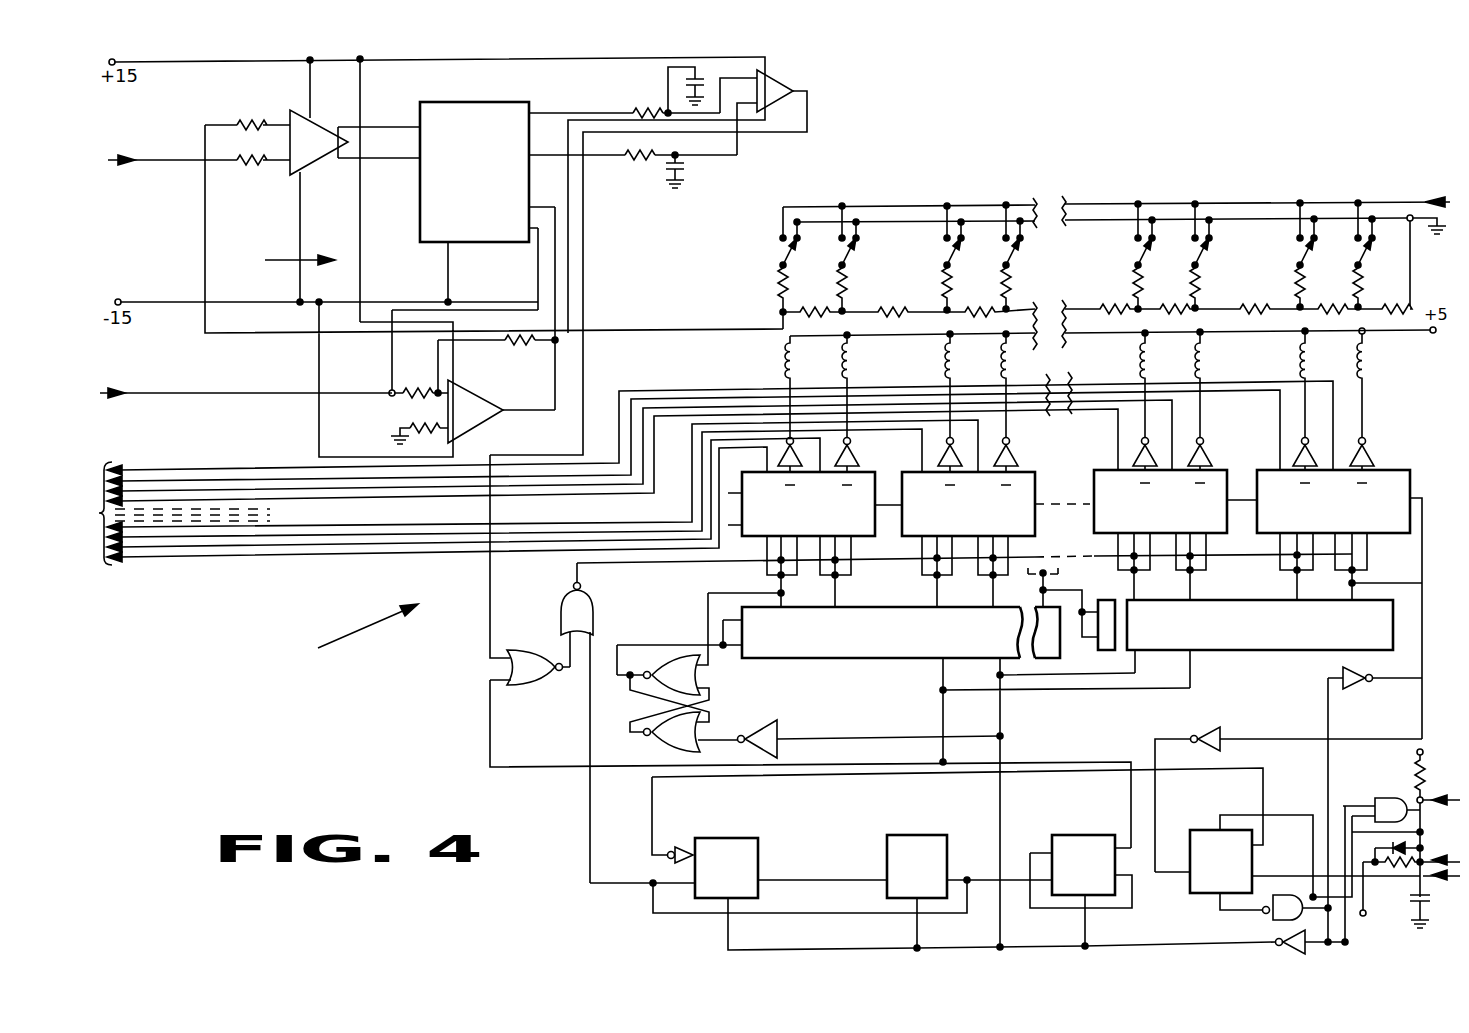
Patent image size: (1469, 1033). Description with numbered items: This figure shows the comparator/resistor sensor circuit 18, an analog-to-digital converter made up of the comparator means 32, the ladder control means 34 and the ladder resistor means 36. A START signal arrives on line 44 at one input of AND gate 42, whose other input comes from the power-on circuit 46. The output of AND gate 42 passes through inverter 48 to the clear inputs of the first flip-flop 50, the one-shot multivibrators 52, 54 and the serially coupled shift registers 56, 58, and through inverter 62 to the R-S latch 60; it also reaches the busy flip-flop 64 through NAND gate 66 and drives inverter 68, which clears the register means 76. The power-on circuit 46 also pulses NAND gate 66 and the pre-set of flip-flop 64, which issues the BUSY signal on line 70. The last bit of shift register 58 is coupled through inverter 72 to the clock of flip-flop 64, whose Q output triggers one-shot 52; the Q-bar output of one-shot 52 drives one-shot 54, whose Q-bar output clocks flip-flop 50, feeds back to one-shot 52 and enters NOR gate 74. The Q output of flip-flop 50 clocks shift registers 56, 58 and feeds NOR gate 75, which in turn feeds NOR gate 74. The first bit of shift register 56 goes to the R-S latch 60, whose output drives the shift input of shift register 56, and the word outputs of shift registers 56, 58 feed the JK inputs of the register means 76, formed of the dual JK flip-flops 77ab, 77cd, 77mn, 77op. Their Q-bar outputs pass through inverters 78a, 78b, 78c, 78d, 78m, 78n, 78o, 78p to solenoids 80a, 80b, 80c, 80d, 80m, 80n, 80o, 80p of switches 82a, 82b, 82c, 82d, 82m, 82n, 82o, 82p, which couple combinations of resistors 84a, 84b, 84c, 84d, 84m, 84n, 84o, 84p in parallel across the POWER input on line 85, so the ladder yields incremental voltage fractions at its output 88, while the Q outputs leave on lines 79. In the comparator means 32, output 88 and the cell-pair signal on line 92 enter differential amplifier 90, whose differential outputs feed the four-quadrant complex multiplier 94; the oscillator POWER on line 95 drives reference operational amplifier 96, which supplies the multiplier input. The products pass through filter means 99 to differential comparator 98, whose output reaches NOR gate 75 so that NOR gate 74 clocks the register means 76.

The comparator/resistor (sensor) circuit 18 is at (354, 633).
The comparator means 32 is at (286, 261).
The ladder control means 34 is at (1400, 565).
The ladder resistor means 36 is at (1420, 270).
The AND gate 42 is at (1380, 798).
The line 44 is at (1445, 802).
The power-on circuit 46 is at (1436, 858).
The inverter 48 is at (1295, 948).
The first flip-flop 50 is at (1060, 836).
The one-shot multivibrator 52 is at (697, 840).
The one-shot multivibrator 54 is at (943, 836).
The shift register 56 is at (858, 608).
The shift register 58 is at (1215, 606).
The R-S latch 60 is at (715, 701).
The inverter 62 is at (772, 732).
The busy flip-flop 64 is at (1196, 836).
The NAND gate 66 is at (1275, 916).
The inverter 68 is at (1340, 680).
The line 70 is at (1426, 896).
The inverter 72 is at (1212, 734).
The NOR gate 74 is at (582, 610).
The NOR gate 75 is at (526, 652).
The register means 76 is at (1415, 489).
The dual JK flip-flop 77ab is at (856, 478).
The dual JK flip-flop 77cd is at (1055, 478).
The dual JK flip-flop 77mn is at (1224, 472).
The dual JK flip-flop 77op is at (1410, 462).
The inverter 78a is at (778, 459).
The inverter 78b is at (846, 458).
The inverter 78c is at (962, 460).
The inverter 78d is at (1012, 454).
The inverter 78m is at (1135, 452).
The inverter 78n is at (1204, 440).
The inverter 78o is at (1312, 452).
The inverter 78p is at (1372, 452).
The lines 79 is at (701, 468).
The solenoid 80a is at (784, 358).
The solenoid 80b is at (841, 358).
The solenoid 80c is at (942, 358).
The solenoid 80d is at (1012, 358).
The solenoid 80m is at (1138, 358).
The solenoid 80n is at (1204, 358).
The solenoid 80o is at (1308, 362).
The solenoid 80p is at (1368, 362).
The switch 82a is at (792, 258).
The switch 82b is at (850, 258).
The switch 82c is at (955, 258).
The switch 82d is at (1014, 258).
The switch 82m is at (1134, 258).
The switch 82n is at (1204, 258).
The switch 82o is at (1308, 258).
The switch 82p is at (1366, 258).
The resistor 84a is at (800, 308).
The resistor 84b is at (858, 306).
The resistor 84c is at (960, 306).
The resistor 84d is at (1016, 306).
The resistor 84m is at (1128, 304).
The resistor 84n is at (1210, 304).
The resistor 84o is at (1316, 304).
The resistor 84p is at (1374, 304).
The line 85 is at (1382, 195).
The output 88 is at (782, 312).
The differential amplifier 90 is at (292, 118).
The line 92 is at (138, 160).
The four quadrant complex multiplier 94 is at (480, 104).
The line 95 is at (120, 395).
The reference operational amplifier 96 is at (500, 406).
The differential comparator 98 is at (780, 82).
The filter means 99 is at (664, 104).